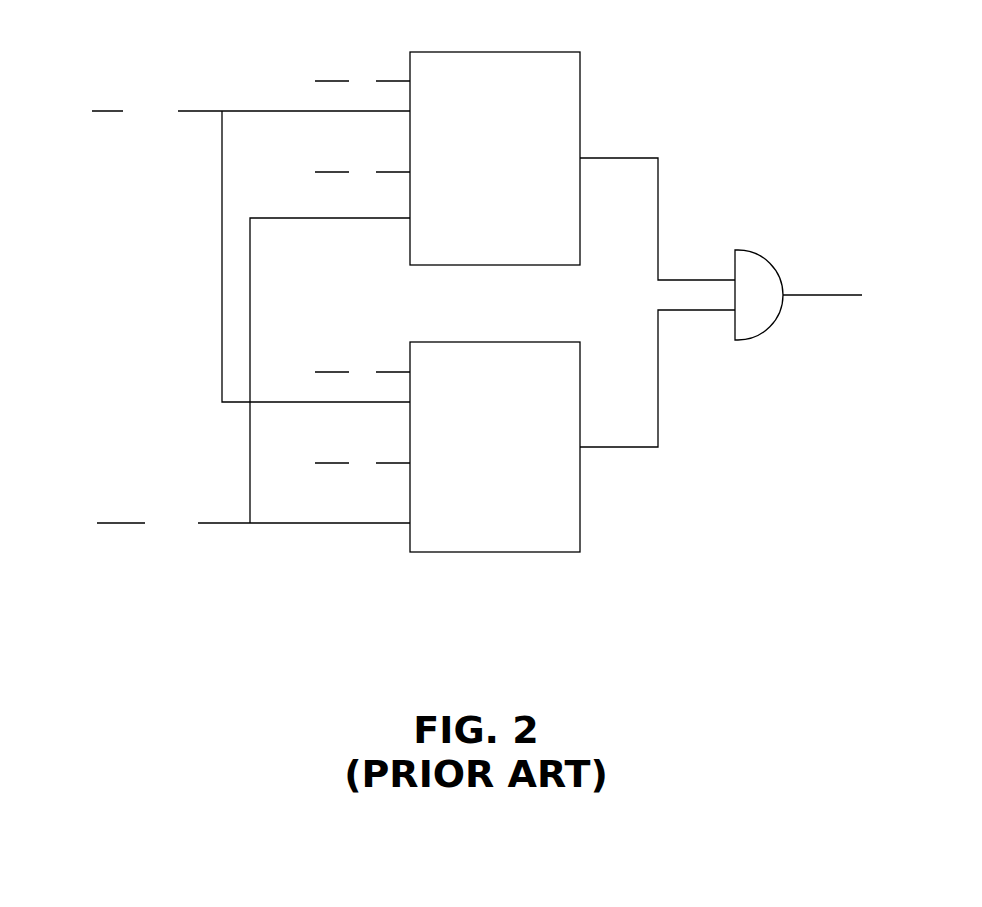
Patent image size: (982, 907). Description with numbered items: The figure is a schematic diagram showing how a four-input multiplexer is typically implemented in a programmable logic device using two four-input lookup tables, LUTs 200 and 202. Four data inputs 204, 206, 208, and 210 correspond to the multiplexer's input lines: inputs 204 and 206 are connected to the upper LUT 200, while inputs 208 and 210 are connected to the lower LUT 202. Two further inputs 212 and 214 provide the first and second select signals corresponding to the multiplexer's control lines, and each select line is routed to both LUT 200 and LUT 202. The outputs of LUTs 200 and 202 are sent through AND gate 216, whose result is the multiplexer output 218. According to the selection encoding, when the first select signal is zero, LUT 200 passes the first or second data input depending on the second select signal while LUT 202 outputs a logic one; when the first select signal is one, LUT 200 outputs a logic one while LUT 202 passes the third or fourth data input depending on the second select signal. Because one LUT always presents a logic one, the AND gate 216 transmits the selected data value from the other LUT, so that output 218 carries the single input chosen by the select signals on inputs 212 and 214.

The LUT 200 is at (470, 52).
The LUT 202 is at (530, 552).
The input 204 is at (325, 81).
The input 206 is at (325, 172).
The input 208 is at (325, 372).
The input 210 is at (325, 463).
The input 212 is at (108, 111).
The input 214 is at (117, 523).
The AND gate 216 is at (775, 268).
The multiplexer output 218 is at (822, 295).